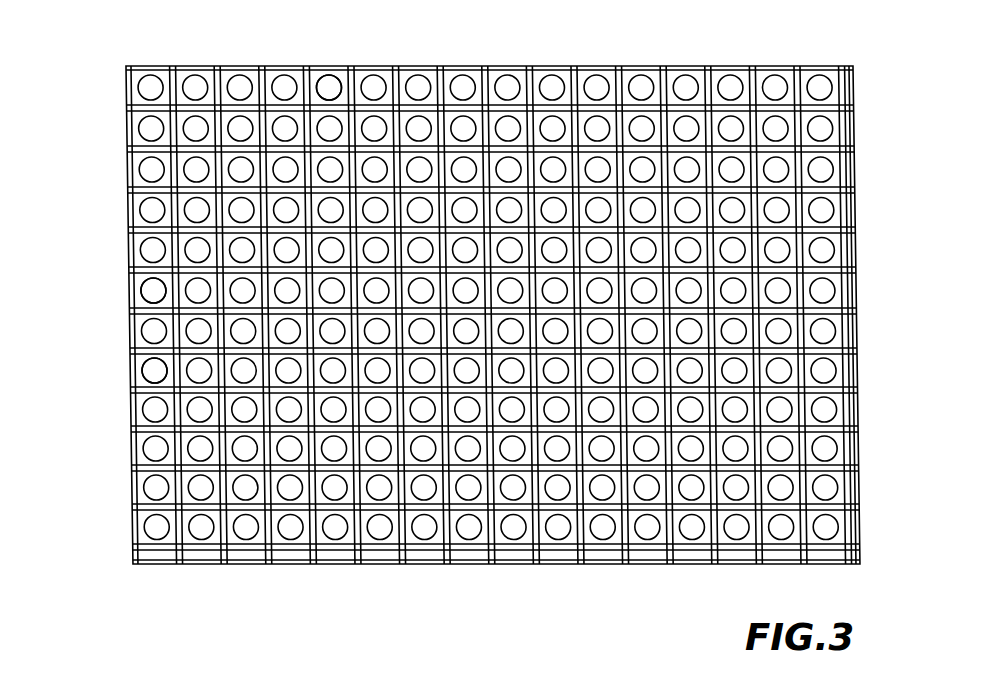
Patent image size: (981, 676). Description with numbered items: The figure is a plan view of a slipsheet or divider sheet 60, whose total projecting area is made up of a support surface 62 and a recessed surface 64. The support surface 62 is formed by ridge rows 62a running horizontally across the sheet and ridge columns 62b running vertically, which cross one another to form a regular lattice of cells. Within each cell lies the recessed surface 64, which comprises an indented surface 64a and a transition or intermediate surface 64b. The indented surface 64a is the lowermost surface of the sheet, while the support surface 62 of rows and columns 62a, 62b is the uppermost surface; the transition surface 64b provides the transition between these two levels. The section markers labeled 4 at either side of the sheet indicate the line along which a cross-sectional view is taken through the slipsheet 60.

The slipsheet or divider sheet 60 is at (76, 94).
The support surface 62 is at (218, 68).
The ridge rows 62a is at (128, 183).
The ridge columns 62b is at (441, 70).
The recessed surface 64 is at (328, 86).
The indented surface 64a is at (150, 294).
The transition or intermediate surface 64b is at (140, 405).
The section line 4- 4 is at (75, 287).